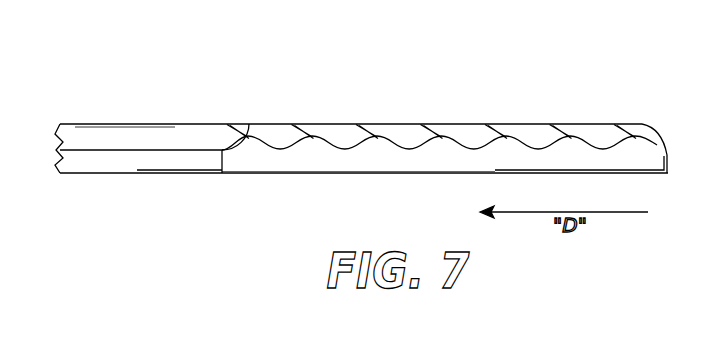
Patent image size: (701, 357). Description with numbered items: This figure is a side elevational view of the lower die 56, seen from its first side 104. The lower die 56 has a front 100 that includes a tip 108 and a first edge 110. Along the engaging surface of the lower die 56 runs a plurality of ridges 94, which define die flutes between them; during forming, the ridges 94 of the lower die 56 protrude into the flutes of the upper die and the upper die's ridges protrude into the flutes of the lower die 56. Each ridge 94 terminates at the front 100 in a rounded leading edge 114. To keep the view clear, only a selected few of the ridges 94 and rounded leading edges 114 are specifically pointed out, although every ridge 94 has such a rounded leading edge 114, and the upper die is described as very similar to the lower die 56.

The lower die 56 is at (88, 120).
The ridges 94 is at (150, 133).
The front 100 is at (575, 158).
The first side 104 is at (115, 163).
The tip 108 is at (668, 160).
The first edge 110 is at (377, 157).
The rounded leading edge 114 is at (251, 123).